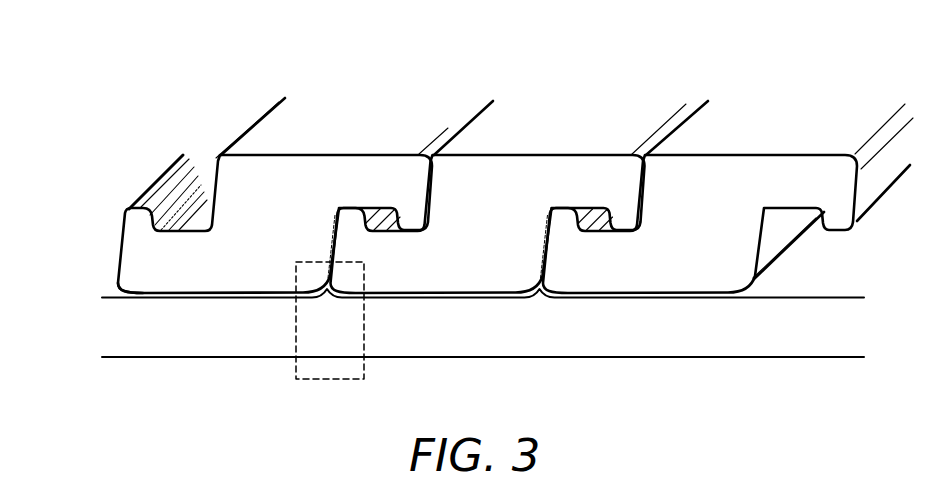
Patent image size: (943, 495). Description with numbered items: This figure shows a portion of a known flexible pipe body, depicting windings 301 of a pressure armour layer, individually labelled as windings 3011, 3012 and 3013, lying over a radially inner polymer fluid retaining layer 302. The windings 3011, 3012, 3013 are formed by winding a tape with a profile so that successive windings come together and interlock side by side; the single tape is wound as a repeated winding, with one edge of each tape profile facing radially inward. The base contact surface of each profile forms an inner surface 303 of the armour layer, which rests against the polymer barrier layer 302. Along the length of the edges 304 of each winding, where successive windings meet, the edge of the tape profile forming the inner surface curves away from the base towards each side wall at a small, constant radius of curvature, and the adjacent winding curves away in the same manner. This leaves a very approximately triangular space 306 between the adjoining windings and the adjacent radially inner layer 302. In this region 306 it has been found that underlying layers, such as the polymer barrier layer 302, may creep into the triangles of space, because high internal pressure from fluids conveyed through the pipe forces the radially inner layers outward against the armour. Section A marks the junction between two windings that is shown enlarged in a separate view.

The windings of a pressure armour layer 301 is at (515, 169).
The first winding of the pressure armour layer 3011 is at (336, 118).
The second winding of the pressure armour layer 3012 is at (548, 118).
The third winding of the pressure armour layer 3013 is at (759, 119).
The radially inner polymer fluid retaining layer 302 is at (476, 341).
The inner surface of the pressure armour layer 303 is at (191, 291).
The edges of each winding 304 is at (780, 236).
The space between adjoining windings and the radially inner layer 306 is at (100, 284).
The section A is at (330, 334).